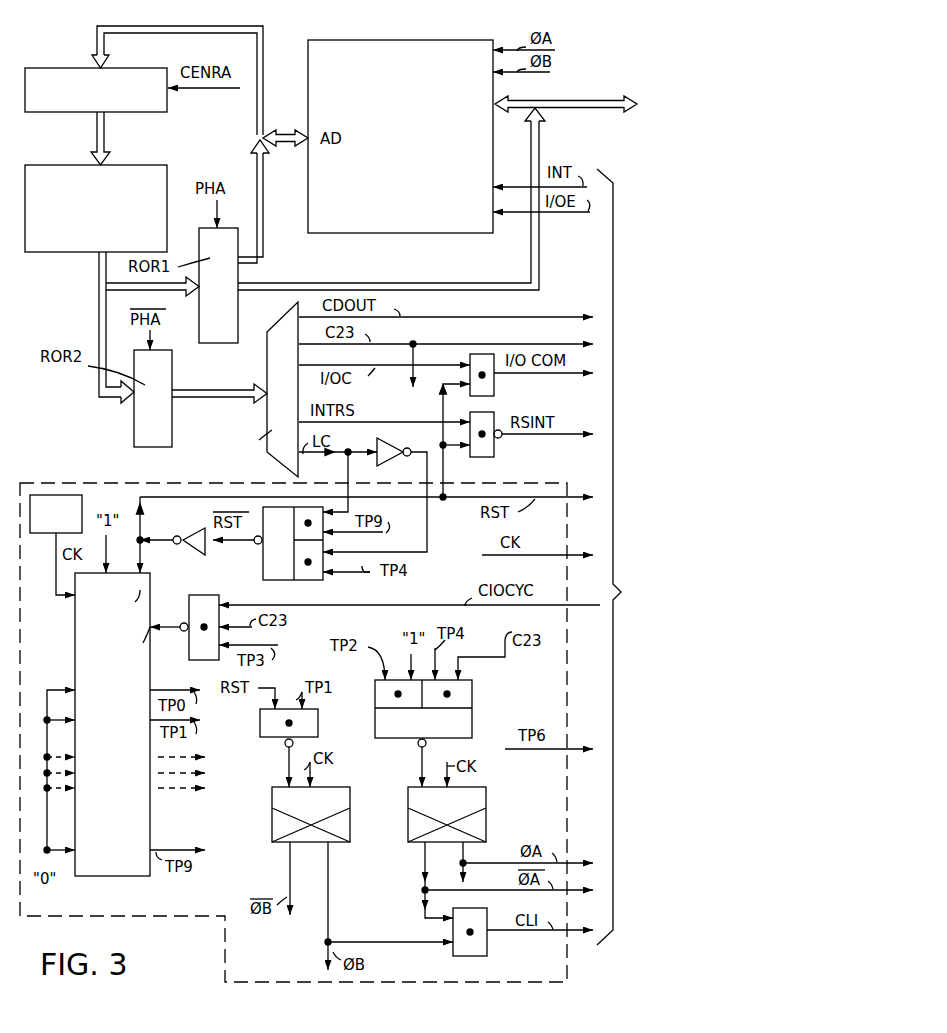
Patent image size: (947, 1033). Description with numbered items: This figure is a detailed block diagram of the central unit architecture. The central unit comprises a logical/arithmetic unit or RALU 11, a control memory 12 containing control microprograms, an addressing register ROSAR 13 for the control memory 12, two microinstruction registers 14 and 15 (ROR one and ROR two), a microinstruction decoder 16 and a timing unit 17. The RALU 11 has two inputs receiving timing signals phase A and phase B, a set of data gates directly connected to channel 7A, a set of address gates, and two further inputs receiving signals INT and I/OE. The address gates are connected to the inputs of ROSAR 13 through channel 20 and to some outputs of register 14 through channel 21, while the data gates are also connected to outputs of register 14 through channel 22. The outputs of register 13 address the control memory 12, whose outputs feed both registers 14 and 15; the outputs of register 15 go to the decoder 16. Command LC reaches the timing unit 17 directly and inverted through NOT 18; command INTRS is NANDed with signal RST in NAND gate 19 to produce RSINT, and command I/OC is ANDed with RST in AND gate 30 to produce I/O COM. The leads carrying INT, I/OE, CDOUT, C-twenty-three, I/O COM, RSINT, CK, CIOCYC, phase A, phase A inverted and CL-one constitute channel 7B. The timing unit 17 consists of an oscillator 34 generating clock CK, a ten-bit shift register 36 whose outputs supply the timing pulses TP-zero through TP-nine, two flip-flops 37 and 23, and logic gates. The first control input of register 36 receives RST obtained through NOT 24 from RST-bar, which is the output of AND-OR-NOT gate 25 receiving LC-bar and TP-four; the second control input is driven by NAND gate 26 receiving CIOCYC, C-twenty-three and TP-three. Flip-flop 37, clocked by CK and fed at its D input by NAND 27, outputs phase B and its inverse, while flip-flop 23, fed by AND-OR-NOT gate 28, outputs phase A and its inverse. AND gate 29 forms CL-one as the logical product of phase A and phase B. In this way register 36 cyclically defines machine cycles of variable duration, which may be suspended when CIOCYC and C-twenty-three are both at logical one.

The channel 7A is at (578, 102).
The channel 7B is at (621, 592).
The RALU 11 is at (340, 233).
The control memory 12 is at (57, 252).
The ROSAR 13 is at (70, 113).
The microinstruction register ROR 1 14 is at (218, 343).
The microinstruction register ROR 2 15 is at (133, 424).
The microinstruction decoder 16 is at (290, 472).
The timing unit 17 is at (60, 472).
The NOT gate 18 is at (394, 461).
The NAND gate 19 is at (498, 450).
The channel 20 is at (262, 70).
The channel 21 is at (265, 203).
The channel 22 is at (458, 283).
The flip-flop 23 is at (408, 813).
The NOT gate 24 is at (186, 532).
The AND-OR-NOT gate 25 is at (263, 565).
The NAND gate 26 is at (190, 605).
The NAND gate 27 is at (266, 740).
The AND-OR-NOT gate 28 is at (388, 740).
The AND gate 29 is at (488, 953).
The AND gate 30 is at (497, 379).
The oscillator 34 is at (85, 510).
The shift register 36 is at (112, 876).
The flip-flop 37 is at (272, 807).